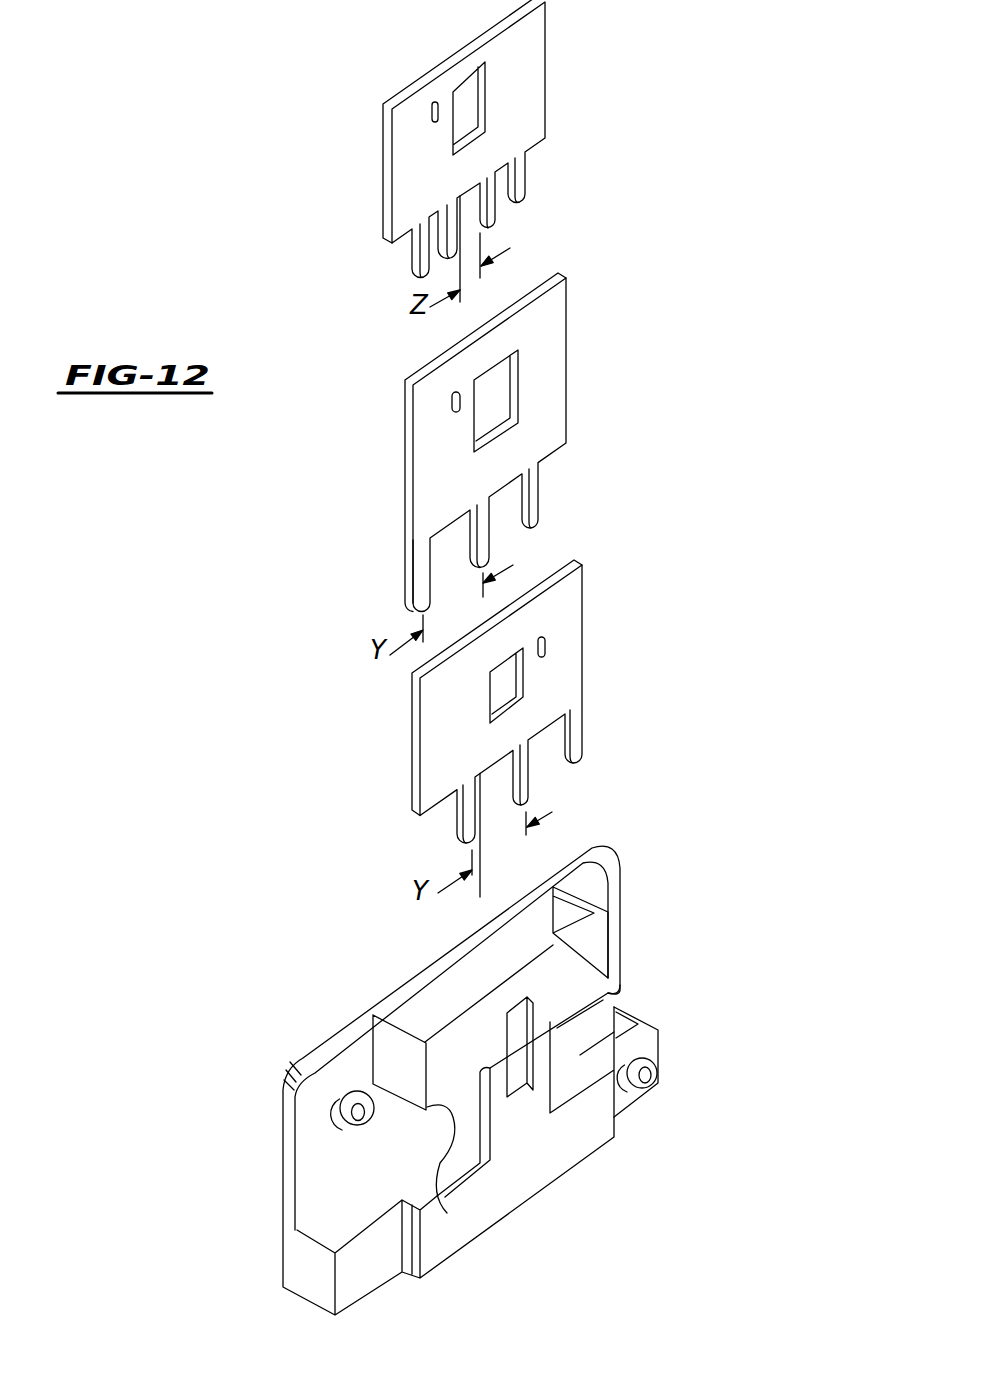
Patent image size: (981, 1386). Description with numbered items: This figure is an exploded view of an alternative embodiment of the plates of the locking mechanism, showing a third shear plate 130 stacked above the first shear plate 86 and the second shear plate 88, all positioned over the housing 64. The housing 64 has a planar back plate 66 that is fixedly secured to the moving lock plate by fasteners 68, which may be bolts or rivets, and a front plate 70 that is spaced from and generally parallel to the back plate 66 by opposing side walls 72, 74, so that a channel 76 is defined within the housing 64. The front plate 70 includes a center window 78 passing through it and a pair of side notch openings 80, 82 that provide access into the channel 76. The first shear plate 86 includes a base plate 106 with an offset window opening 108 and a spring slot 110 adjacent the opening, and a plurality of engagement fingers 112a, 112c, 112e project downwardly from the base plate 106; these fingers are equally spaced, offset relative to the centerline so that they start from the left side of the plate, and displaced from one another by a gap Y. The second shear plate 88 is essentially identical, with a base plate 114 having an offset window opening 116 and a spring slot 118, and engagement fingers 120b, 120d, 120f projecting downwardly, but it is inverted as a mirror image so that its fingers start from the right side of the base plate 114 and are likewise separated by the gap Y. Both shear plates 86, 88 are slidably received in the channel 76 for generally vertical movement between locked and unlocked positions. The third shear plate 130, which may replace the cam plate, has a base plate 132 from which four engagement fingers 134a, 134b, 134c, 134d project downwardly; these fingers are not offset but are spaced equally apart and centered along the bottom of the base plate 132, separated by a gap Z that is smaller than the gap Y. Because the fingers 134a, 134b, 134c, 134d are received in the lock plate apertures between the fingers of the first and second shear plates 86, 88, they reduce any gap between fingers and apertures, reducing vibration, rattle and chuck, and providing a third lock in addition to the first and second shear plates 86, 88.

The housing 64 is at (290, 1056).
The back plate 66 is at (287, 1130).
The fasteners 68 is at (652, 1056).
The front plate 70 is at (578, 981).
The side wall 72 is at (412, 1075).
The side wall 74 is at (590, 883).
The channel 76 is at (422, 1000).
The center window 78 is at (515, 1010).
The side notch opening 80 is at (453, 1168).
The side notch opening 82 is at (618, 990).
The first shear plate 86 is at (405, 480).
The second shear plate 88 is at (412, 742).
The base plate 106 is at (566, 372).
The offset window opening 108 is at (518, 370).
The spring slot 110 is at (452, 408).
The engagement finger 112a is at (417, 585).
The engagement finger 112c is at (488, 540).
The engagement finger 112e is at (538, 498).
The base plate 114 is at (582, 657).
The offset window opening 116 is at (490, 693).
The spring slot 118 is at (543, 647).
The engagement finger 120b is at (460, 815).
The engagement finger 120d is at (528, 778).
The engagement finger 120f is at (577, 738).
The third shear plate 130 is at (383, 137).
The base plate 132 is at (537, 63).
The engagement finger 134a is at (409, 263).
The engagement finger 134b is at (449, 233).
The engagement finger 134c is at (492, 222).
The engagement finger 134d is at (518, 179).